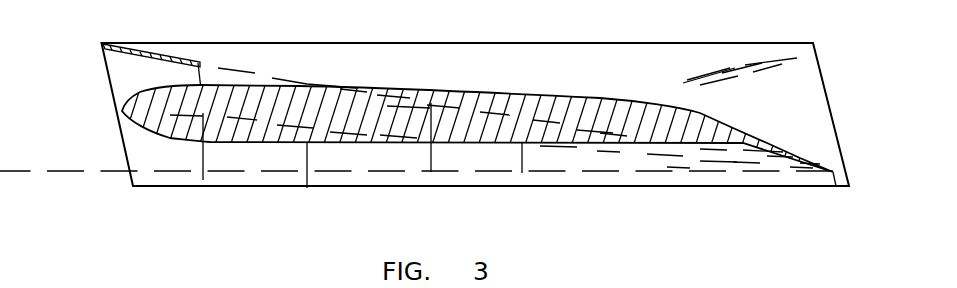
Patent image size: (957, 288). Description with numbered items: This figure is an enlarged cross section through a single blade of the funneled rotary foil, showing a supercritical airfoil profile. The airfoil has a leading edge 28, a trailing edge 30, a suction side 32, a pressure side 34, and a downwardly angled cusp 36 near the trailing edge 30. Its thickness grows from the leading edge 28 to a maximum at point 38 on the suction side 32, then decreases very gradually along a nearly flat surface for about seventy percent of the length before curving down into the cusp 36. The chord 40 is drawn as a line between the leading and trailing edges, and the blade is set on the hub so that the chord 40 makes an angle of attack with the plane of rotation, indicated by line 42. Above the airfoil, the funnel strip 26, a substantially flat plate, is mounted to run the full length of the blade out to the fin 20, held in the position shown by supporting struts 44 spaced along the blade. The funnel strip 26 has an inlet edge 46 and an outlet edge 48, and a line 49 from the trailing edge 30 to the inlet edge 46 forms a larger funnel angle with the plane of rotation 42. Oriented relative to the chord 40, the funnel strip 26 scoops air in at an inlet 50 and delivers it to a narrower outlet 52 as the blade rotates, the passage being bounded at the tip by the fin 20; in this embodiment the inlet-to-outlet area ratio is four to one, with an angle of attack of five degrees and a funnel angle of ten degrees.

The fin 20 is at (600, 43).
The funnel strip 26 is at (130, 47).
The leading edge 28 is at (125, 113).
The trailing edge 30 is at (835, 178).
The suction side 32 is at (398, 85).
The pressure side 34 is at (307, 188).
The cusp 36 is at (760, 143).
The point of maximum thickness 38 is at (240, 70).
The chord 40 is at (202, 178).
The plane of rotation 42 is at (377, 172).
The supporting struts 44 is at (163, 89).
The inlet edge 46 is at (101, 42).
The outlet edge 48 is at (200, 62).
The line 49 is at (272, 78).
The inlet 50 is at (117, 87).
The outlet 52 is at (207, 84).